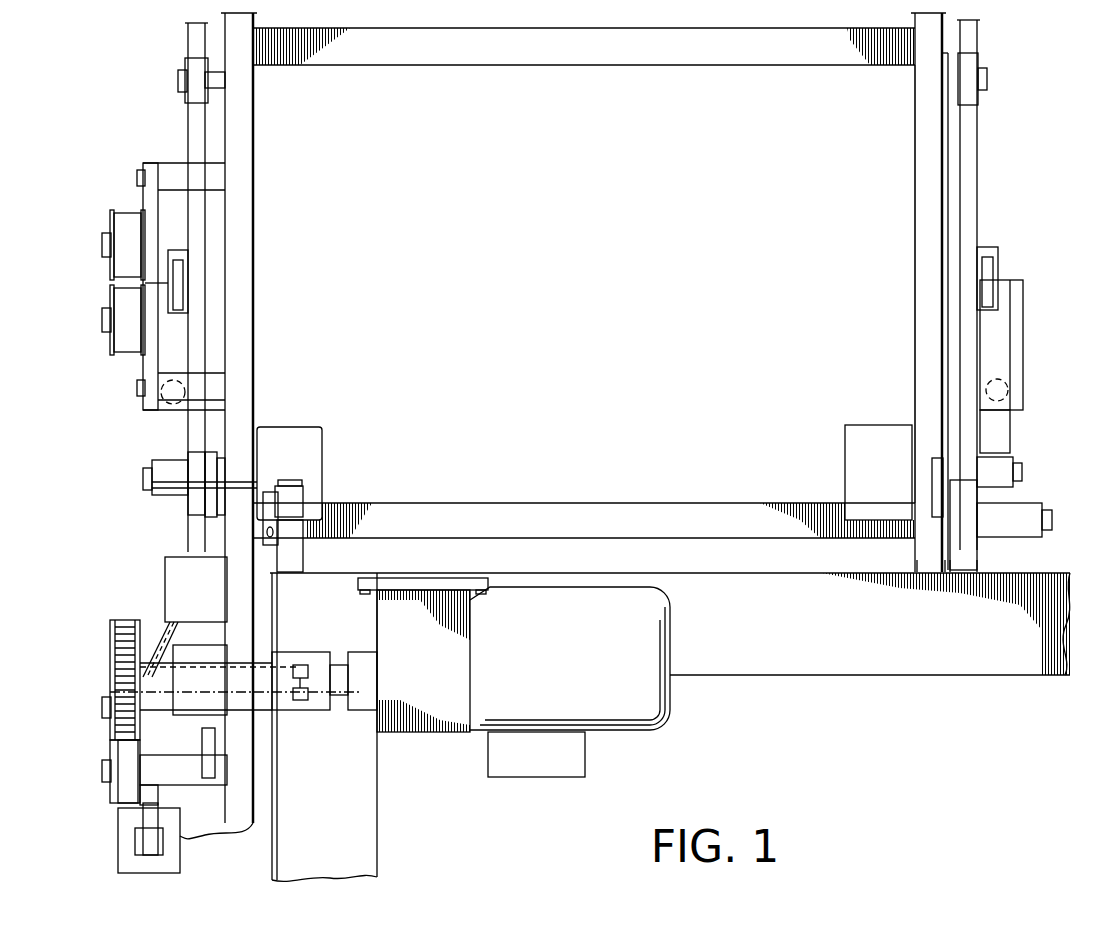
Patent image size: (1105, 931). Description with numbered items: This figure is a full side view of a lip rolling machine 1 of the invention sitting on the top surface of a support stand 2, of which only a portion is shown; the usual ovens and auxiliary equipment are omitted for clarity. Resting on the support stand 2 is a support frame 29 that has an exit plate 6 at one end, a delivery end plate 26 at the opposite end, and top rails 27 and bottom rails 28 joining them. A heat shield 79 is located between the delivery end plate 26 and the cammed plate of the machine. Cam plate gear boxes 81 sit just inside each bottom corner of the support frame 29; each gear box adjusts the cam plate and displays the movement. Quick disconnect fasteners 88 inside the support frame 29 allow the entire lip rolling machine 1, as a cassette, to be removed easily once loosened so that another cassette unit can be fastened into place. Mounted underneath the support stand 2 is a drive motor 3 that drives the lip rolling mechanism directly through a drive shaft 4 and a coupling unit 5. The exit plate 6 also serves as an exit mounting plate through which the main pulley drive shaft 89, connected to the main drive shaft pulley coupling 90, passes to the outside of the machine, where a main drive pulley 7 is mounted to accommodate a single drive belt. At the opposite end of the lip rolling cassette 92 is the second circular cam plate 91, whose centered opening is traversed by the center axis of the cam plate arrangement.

The lip rolling machine 1 is at (562, 272).
The support stand 2 is at (995, 642).
The drive motor 3 is at (630, 643).
The drive shaft 4 is at (340, 690).
The coupling unit 5 is at (318, 712).
The exit plate 6 is at (240, 125).
The main drive pulley 7 is at (110, 632).
The delivery end plate 26 is at (928, 238).
The top rails 27 is at (478, 50).
The bottom rails 28 is at (695, 518).
The support frame 29 is at (765, 43).
The heat shield 79 is at (942, 202).
The cam plate gear boxes 81 is at (318, 462).
The quick disconnect fasteners 88 is at (292, 480).
The main pulley drive shaft 89 is at (210, 683).
The main drive shaft pulley coupling 90 is at (280, 712).
The second circular cam plate 91 is at (968, 35).
The lip rolling cassette 92 is at (928, 122).